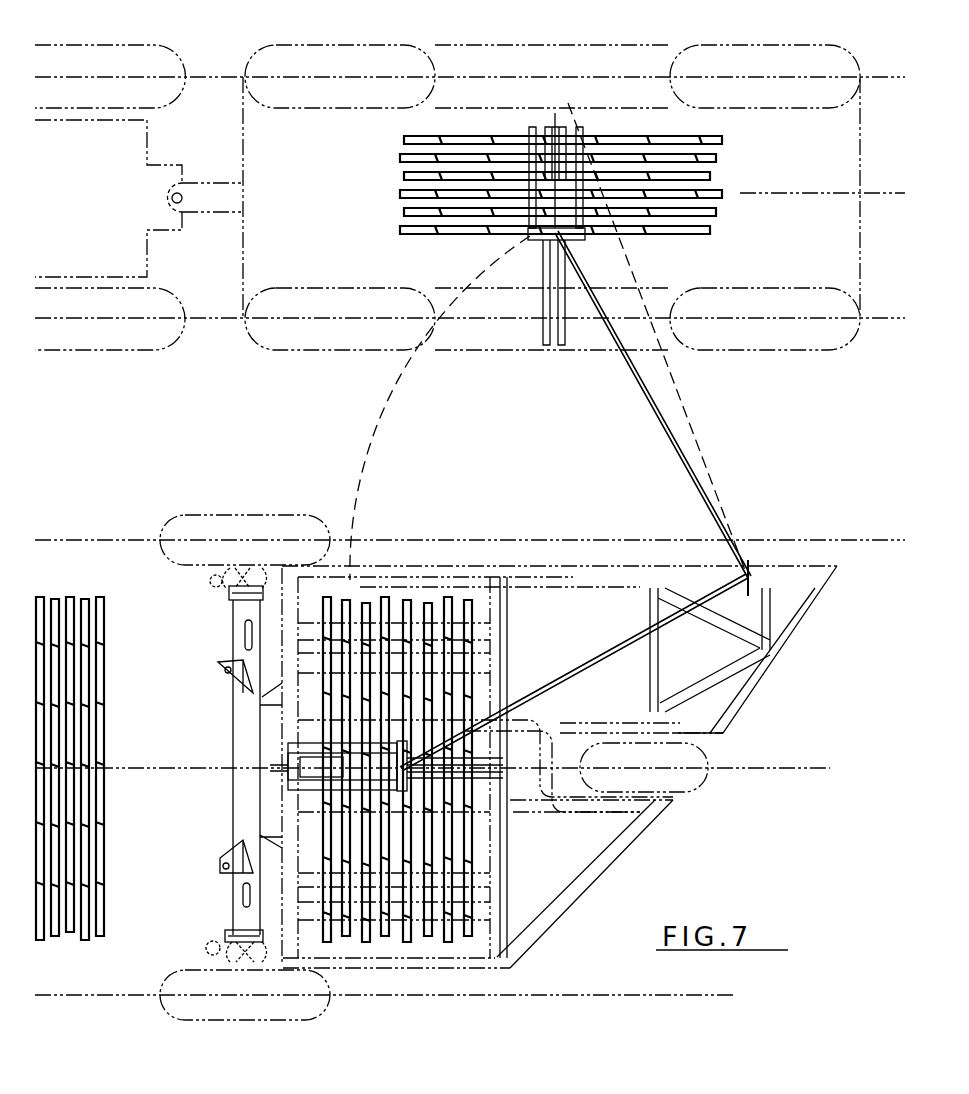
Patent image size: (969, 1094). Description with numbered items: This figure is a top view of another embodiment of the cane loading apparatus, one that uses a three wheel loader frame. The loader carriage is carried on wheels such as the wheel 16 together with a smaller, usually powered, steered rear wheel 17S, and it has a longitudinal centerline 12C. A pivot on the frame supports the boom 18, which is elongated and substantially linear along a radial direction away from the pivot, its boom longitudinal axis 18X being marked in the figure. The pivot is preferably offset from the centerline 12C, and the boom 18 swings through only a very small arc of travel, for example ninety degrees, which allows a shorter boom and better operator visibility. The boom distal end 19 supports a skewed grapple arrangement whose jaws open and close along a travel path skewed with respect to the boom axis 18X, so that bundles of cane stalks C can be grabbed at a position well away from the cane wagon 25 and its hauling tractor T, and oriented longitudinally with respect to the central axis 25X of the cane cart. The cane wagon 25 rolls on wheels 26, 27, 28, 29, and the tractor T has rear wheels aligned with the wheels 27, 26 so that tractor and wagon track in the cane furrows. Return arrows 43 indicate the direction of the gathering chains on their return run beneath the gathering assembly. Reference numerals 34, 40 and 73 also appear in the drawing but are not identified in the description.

The centerline of the frame 12C is at (798, 776).
The wheel 16 is at (196, 515).
The steered rear wheel 17S is at (695, 778).
The boom 18 is at (677, 470).
The boom longitudinal axis 18X is at (630, 361).
The boom distal end 19 is at (578, 238).
The cane wagon 25 is at (242, 158).
The central axis of cane wagon 25X is at (852, 196).
The wagon wheel 26 is at (342, 350).
The wagon wheel 27 is at (323, 45).
The wagon wheel 28 is at (784, 350).
The wagon wheel 29 is at (753, 45).
The cart axle line 34 is at (876, 540).
The boom pivot 40 is at (762, 568).
The return arrows 43 is at (206, 768).
The grab cylinder 73 is at (525, 217).
The cane stalks C is at (402, 222).
The tractor T is at (111, 45).